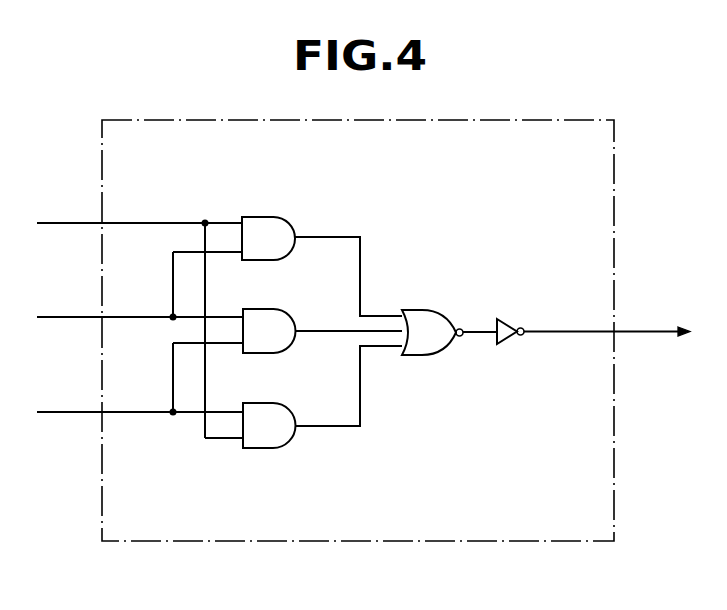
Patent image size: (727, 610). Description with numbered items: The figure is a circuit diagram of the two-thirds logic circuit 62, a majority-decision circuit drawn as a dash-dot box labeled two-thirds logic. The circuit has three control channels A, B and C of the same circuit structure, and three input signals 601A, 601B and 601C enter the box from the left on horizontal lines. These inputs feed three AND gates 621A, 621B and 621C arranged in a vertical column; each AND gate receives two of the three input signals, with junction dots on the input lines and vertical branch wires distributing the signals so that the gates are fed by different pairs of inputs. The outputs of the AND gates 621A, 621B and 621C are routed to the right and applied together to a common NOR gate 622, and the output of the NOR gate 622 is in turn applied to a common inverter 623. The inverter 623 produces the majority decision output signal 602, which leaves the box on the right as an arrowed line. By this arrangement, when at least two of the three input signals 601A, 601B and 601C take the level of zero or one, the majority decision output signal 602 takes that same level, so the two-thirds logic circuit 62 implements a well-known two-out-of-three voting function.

The ⅔ logic circuit 62 is at (460, 522).
The input signal 601A is at (60, 222).
The input signal 601B is at (60, 316).
The input signal 601C is at (60, 411).
The AND gate 621A is at (294, 198).
The AND gate 621B is at (294, 293).
The AND gate 621C is at (292, 391).
The NOR gate 622 is at (437, 311).
The inverter 623 is at (515, 318).
The majority decision output signal 602 is at (648, 330).